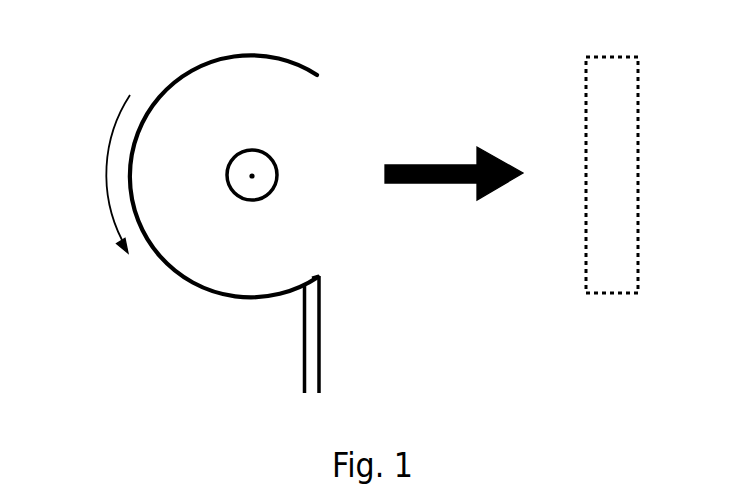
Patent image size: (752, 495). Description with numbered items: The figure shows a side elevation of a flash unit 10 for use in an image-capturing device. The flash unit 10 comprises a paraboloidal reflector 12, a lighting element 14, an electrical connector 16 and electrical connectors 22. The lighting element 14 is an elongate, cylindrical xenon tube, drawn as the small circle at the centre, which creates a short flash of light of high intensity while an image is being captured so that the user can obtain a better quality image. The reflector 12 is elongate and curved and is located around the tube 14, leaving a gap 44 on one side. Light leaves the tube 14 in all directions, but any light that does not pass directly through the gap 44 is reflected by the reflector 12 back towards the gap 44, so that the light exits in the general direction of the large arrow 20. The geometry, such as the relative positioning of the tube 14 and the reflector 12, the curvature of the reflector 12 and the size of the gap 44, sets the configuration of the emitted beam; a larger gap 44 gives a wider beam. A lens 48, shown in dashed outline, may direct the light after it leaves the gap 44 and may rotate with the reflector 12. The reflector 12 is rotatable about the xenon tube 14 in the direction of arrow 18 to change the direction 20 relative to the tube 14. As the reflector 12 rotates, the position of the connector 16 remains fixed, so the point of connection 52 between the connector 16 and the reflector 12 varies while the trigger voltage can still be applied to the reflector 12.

The flash unit 10 is at (149, 308).
The paraboloidal reflector 12 is at (168, 265).
The lighting element 14 is at (278, 175).
The electrical connector 16 is at (321, 335).
The arrow 18 is at (107, 173).
The large arrow 20 is at (490, 193).
The electrical connectors 22 is at (252, 177).
The gap 44 is at (322, 205).
The lens 48 is at (608, 57).
The point of connection 52 is at (320, 275).